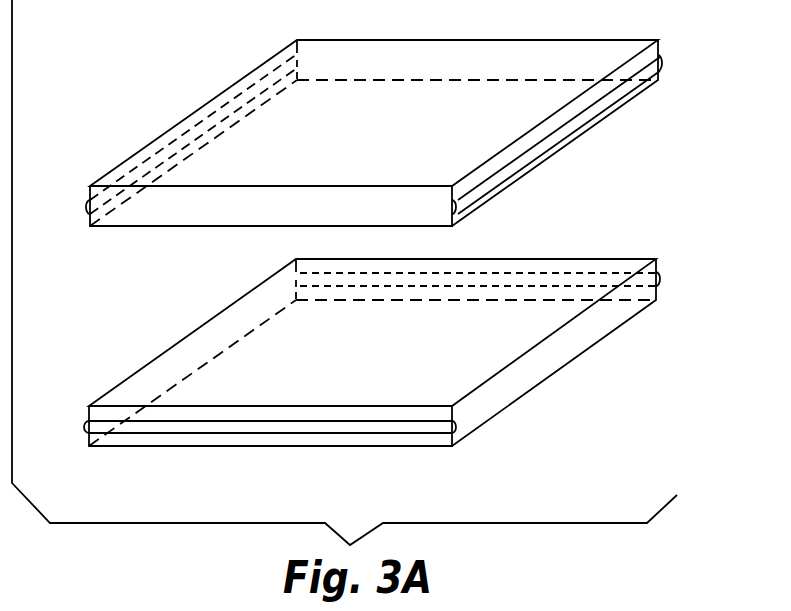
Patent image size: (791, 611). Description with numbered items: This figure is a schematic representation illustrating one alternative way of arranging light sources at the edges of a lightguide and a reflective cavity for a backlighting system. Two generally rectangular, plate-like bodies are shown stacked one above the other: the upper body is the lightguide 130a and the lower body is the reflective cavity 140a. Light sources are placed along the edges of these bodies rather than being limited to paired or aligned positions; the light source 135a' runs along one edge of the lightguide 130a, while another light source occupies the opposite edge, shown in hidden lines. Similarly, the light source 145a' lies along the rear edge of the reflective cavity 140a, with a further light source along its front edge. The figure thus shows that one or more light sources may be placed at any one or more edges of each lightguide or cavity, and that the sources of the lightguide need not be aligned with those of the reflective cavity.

The lightguide 130a is at (633, 88).
The light source 135a' is at (557, 134).
The reflective cavity 140a is at (578, 347).
The light source 145a' is at (505, 255).